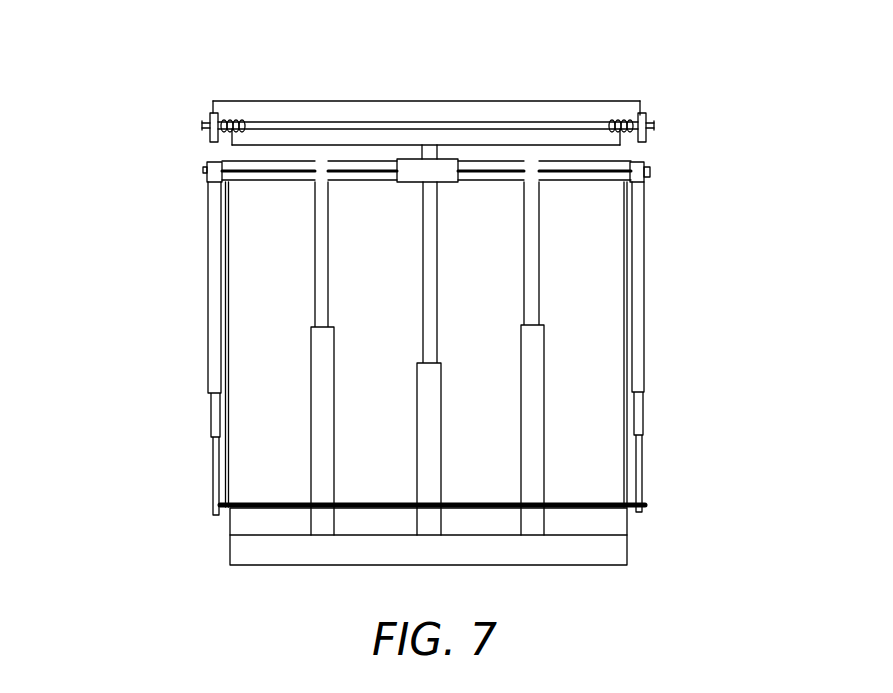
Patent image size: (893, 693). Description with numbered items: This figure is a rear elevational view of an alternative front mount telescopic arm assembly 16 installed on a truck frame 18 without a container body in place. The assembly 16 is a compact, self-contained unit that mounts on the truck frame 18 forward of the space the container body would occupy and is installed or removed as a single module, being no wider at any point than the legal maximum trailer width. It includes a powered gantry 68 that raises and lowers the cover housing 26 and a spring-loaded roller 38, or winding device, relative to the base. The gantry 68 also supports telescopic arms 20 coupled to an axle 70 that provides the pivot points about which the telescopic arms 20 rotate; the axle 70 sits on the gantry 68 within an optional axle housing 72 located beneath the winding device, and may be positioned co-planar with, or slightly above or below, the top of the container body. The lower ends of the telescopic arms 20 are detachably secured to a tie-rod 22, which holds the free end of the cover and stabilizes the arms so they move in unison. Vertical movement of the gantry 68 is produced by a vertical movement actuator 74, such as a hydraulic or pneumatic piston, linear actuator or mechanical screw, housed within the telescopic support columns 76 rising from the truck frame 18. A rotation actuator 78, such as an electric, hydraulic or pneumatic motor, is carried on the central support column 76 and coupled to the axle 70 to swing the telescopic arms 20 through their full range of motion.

The front mount telescopic arm assembly 16 is at (682, 150).
The truck frame 18 is at (252, 550).
The telescopic arms 20 is at (207, 362).
The tie-rod 22 is at (593, 508).
The cover housing 26 is at (468, 100).
The spring-loaded roller 38 is at (203, 125).
The powered gantry 68 is at (442, 393).
The axle 70 is at (203, 170).
The axle housing 72 is at (258, 180).
The vertical movement actuator 74 is at (297, 358).
The telescopic support columns 76 is at (532, 475).
The rotation actuator 78 is at (408, 168).